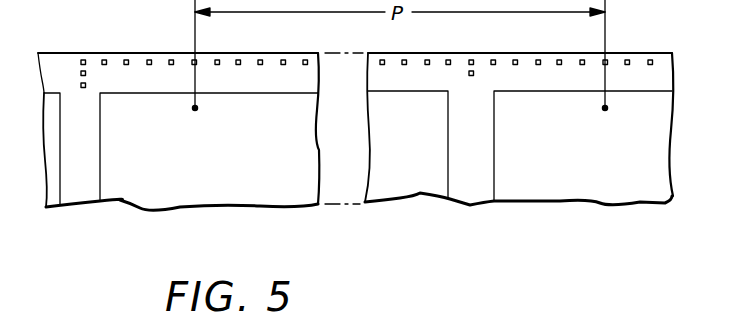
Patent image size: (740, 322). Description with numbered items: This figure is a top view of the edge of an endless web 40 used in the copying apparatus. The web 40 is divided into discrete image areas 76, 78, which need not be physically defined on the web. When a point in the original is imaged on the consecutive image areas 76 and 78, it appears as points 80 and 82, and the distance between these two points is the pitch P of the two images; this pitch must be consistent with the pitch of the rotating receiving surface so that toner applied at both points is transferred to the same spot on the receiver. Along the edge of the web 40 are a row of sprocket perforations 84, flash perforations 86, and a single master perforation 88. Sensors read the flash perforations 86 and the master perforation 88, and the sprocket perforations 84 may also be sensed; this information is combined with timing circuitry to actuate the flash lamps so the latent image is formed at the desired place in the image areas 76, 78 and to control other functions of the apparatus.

The web 40 is at (483, 53).
The image area 76 is at (205, 187).
The image area 78 is at (519, 143).
The point 80 is at (195, 108).
The point 82 is at (605, 108).
The sprocket perforations 84 is at (88, 60).
The flash perforations 86 is at (81, 71).
The master perforation 88 is at (86, 83).